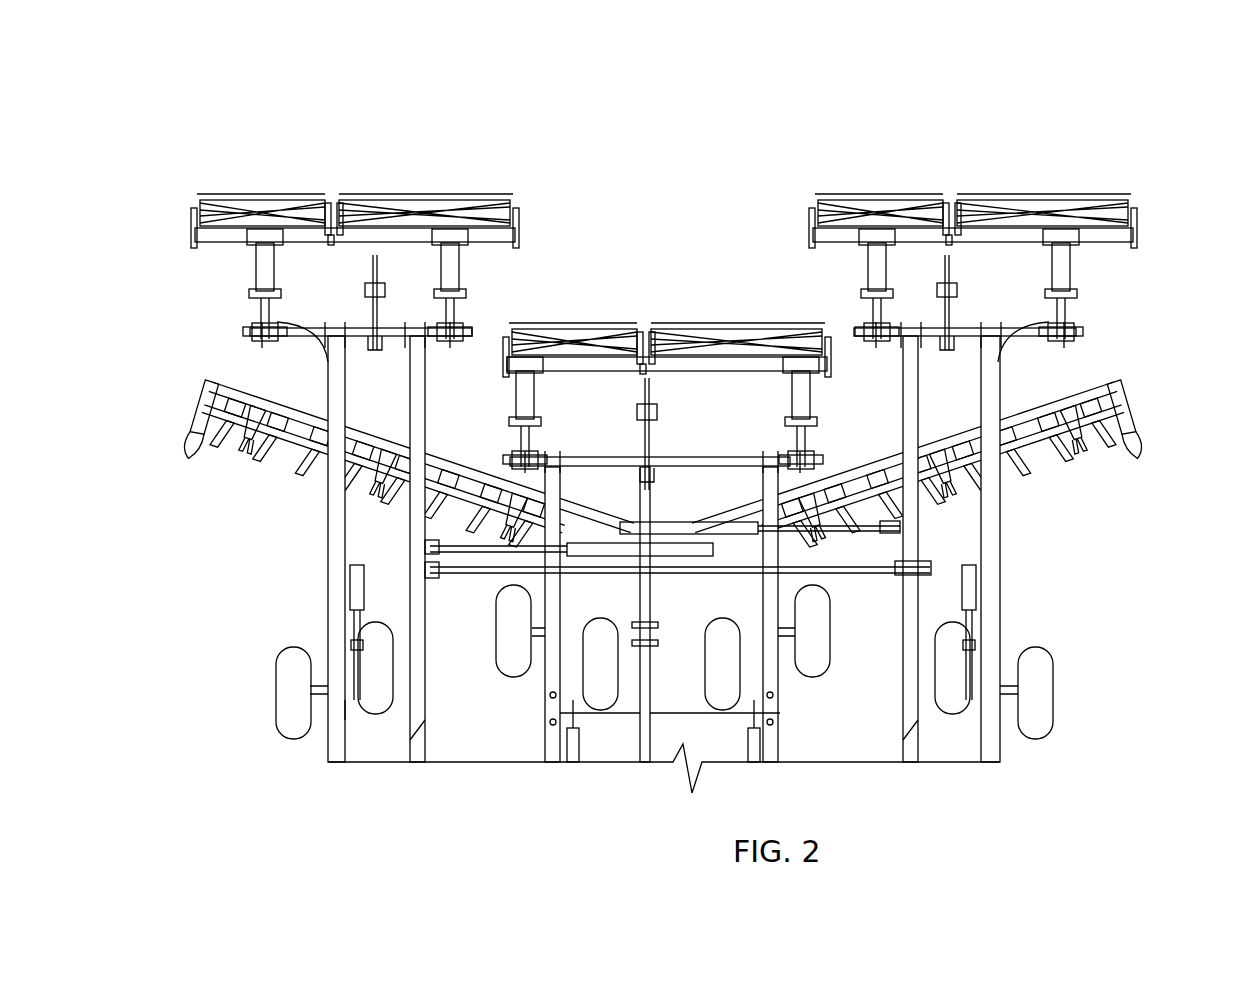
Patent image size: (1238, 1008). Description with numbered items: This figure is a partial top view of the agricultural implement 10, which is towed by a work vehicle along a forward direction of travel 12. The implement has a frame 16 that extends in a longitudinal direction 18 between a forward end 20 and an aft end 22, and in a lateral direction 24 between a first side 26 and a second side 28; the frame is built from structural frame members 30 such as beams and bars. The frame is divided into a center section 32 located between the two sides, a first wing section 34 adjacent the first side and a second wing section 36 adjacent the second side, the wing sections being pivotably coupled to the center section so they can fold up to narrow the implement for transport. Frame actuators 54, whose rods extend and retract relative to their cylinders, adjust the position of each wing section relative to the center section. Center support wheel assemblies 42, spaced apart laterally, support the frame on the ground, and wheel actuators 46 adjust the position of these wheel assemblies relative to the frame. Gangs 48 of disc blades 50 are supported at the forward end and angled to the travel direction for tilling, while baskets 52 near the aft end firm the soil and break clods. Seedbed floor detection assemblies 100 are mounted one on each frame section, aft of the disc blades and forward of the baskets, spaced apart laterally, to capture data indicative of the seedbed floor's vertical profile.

The agricultural implement 10 is at (296, 100).
The forward direction of travel 12 is at (157, 772).
The frame 16 is at (500, 755).
The longitudinal direction 18 is at (157, 485).
The forward end 20 is at (332, 803).
The aft end 22 is at (170, 330).
The lateral direction 24 is at (550, 122).
The first side 26 is at (1065, 520).
The second side 28 is at (260, 556).
The structural frame members 30 is at (293, 340).
The center section 32 is at (628, 798).
The first wing section 34 is at (975, 785).
The second wing section 36 is at (275, 771).
The center support wheel assemblies 42 is at (276, 694).
The wheel actuators 46 is at (362, 590).
The gangs of disc blades 48 is at (170, 403).
The disc blades 50 is at (215, 450).
The baskets 52 is at (256, 196).
The frame actuators 54 is at (652, 522).
The seedbed floor detection assemblies 100 is at (366, 290).